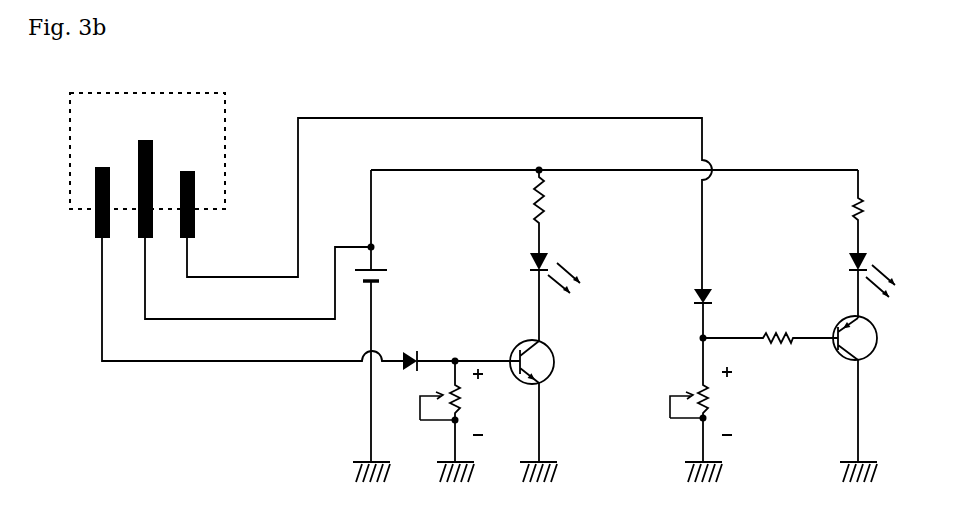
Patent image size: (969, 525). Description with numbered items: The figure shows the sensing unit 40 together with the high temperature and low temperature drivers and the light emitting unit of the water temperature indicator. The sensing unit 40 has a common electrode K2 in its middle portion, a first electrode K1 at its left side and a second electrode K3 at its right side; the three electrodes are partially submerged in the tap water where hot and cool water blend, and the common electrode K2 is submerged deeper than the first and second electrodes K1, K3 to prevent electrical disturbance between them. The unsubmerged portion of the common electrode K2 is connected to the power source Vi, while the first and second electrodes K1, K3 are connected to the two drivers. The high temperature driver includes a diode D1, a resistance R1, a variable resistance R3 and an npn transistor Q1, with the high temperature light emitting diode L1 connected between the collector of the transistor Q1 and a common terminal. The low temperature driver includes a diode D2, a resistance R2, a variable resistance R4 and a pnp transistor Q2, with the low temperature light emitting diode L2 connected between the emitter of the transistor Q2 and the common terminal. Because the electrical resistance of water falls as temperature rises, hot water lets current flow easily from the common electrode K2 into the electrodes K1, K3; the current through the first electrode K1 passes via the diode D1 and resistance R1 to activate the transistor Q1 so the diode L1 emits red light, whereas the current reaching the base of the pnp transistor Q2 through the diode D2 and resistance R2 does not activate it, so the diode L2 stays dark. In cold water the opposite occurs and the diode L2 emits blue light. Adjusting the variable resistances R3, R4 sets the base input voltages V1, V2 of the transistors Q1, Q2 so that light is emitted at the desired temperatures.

The sensing unit 40 is at (74, 236).
The first electrode K1 is at (245, 249).
The common electrode K2 is at (250, 215).
The second electrode K3 is at (442, 203).
The supply voltage source Vi is at (386, 326).
The diode D1 is at (425, 342).
The resistance R1 is at (486, 339).
The variable resistance R3 is at (429, 421).
The base input voltage V1 is at (484, 402).
The high temperature light emitting diode L1 is at (556, 255).
The npn transistor Q1 is at (553, 411).
The diode D2 is at (724, 308).
The resistance R2 is at (769, 323).
The variable resistance R4 is at (677, 410).
The base input voltage V2 is at (732, 401).
The low temperature light emitting diode L2 is at (876, 244).
The pnp transistor Q2 is at (874, 399).